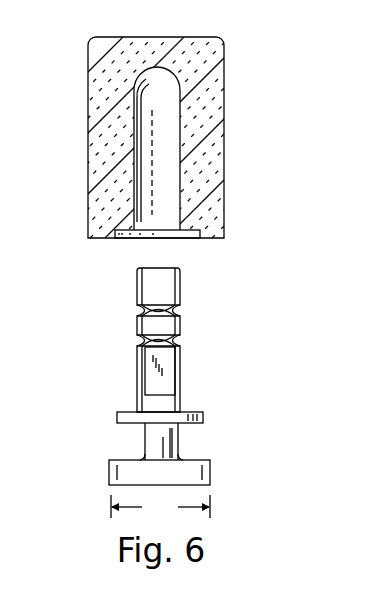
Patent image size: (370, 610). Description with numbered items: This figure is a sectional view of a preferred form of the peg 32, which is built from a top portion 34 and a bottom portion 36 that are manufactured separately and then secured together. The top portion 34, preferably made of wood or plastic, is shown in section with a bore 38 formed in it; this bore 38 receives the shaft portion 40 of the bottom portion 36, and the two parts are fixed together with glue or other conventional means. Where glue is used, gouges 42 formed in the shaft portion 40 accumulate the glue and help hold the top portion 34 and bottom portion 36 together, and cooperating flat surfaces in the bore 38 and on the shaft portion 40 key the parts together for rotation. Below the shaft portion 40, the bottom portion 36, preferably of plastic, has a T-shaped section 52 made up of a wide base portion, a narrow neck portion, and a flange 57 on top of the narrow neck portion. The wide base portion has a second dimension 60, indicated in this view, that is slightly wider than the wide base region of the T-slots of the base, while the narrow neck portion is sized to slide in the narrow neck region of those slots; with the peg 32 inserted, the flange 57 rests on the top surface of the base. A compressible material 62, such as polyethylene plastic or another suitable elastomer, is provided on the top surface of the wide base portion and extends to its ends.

The peg 32 is at (107, 270).
The top portion 34 is at (226, 113).
The bottom portion 36 is at (183, 361).
The bore 38 is at (153, 78).
The shaft portion 40 is at (182, 324).
The gouges 42 is at (179, 309).
The T-shaped section 52 is at (204, 452).
The flange 57 is at (200, 413).
The second dimension 60 is at (160, 507).
The compressible material 62 is at (131, 460).